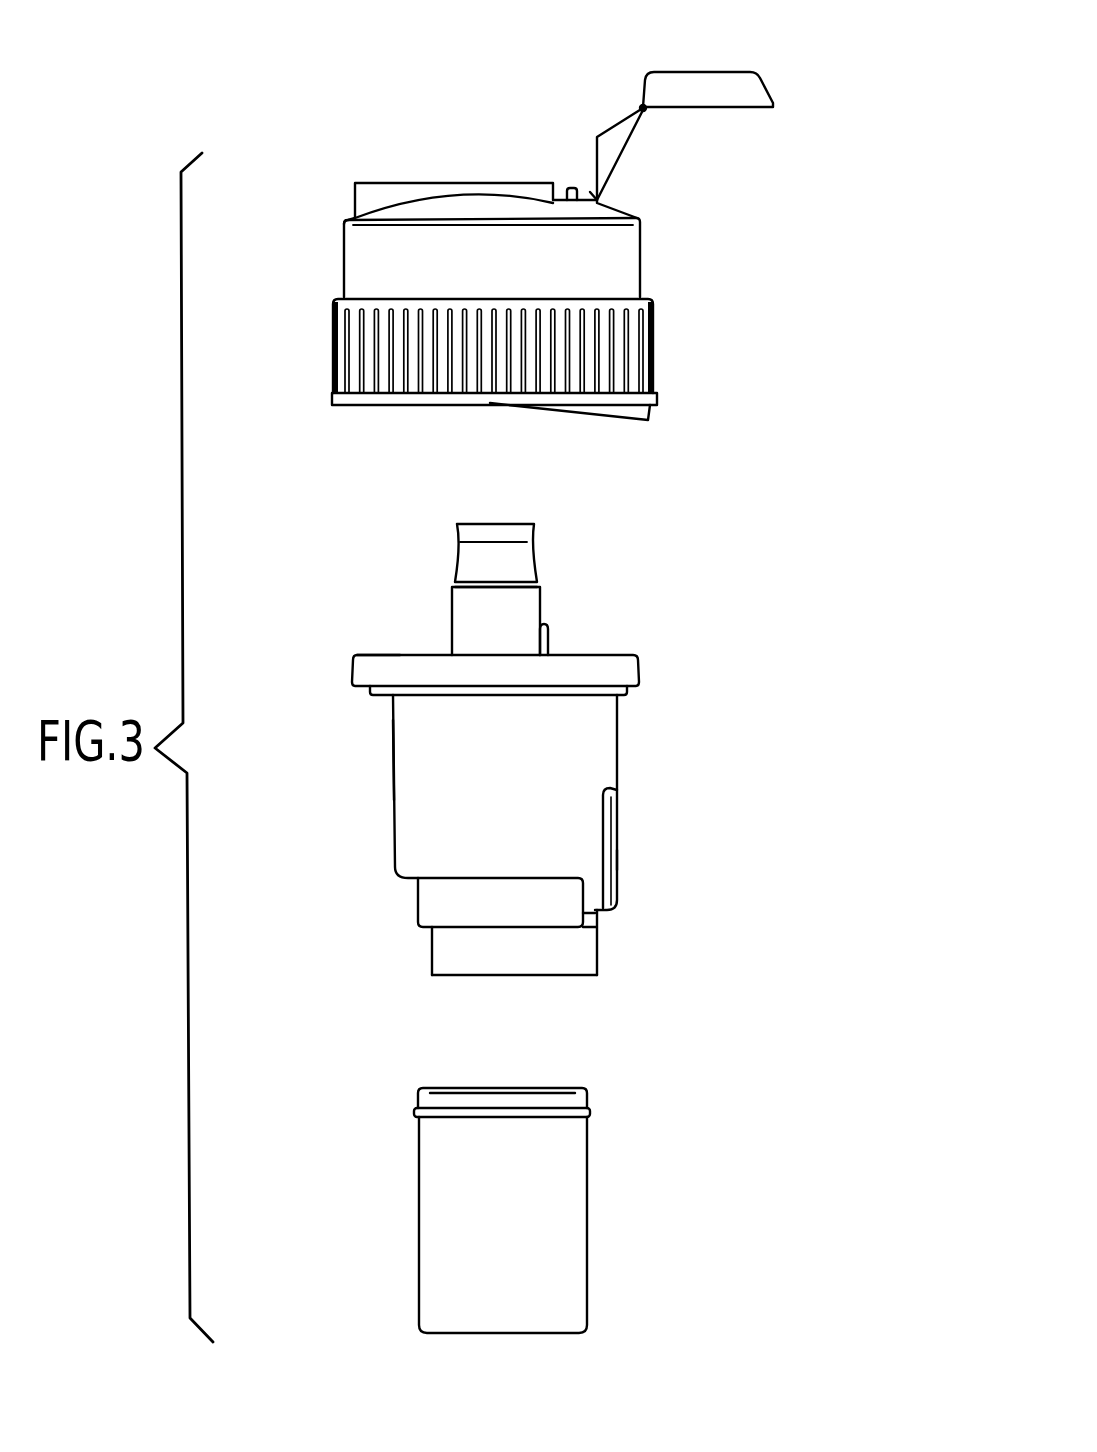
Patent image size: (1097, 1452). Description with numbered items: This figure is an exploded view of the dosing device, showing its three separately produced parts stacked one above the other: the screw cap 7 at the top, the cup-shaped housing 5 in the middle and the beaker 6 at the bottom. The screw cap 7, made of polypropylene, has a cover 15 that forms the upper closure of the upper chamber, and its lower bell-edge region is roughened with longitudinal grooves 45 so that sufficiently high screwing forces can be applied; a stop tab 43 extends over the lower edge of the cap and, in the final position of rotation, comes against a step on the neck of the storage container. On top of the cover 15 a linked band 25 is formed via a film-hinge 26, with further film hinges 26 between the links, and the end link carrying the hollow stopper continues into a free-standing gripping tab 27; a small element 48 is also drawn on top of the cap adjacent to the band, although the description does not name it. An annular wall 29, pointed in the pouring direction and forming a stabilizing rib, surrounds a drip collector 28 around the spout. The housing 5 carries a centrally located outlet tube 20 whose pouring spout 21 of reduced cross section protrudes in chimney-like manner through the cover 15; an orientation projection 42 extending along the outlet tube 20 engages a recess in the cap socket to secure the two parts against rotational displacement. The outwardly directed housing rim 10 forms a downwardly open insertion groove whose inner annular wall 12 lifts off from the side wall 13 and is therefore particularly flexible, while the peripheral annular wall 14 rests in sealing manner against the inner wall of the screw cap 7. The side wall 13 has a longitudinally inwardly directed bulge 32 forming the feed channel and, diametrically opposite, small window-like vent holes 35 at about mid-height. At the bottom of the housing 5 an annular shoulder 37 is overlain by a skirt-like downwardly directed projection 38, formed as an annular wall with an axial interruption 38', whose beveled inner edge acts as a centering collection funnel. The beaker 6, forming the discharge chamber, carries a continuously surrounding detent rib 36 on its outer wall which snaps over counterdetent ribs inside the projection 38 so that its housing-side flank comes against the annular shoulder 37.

The cup-shaped housing 5 is at (619, 860).
The beaker 6 is at (588, 1200).
The screw cap 7 is at (641, 245).
The housing rim 10 is at (360, 655).
The inner annular wall 12 is at (630, 690).
The side wall 13 is at (618, 750).
The peripheral annular wall 14 is at (638, 670).
The cover 15 is at (480, 208).
The outlet tube 20 is at (542, 598).
The pouring spout 21 is at (536, 530).
The linked band 25 is at (630, 142).
The film-hinge 26 is at (590, 190).
The gripping tab 27 is at (757, 93).
The drip collector 28 is at (382, 193).
The annular wall 29 is at (355, 193).
The inwardly directed bulge 32 is at (405, 742).
The vent holes 35 is at (618, 795).
The detent rib 36 is at (414, 1113).
The annular shoulder 37 is at (432, 977).
The skirt-like projection 38 is at (645, 942).
The axial interruption 38' is at (431, 904).
The orientation projection 42 is at (553, 643).
The stop tab 43 is at (653, 410).
The grooves 45 is at (653, 325).
The stop block 48 is at (567, 193).